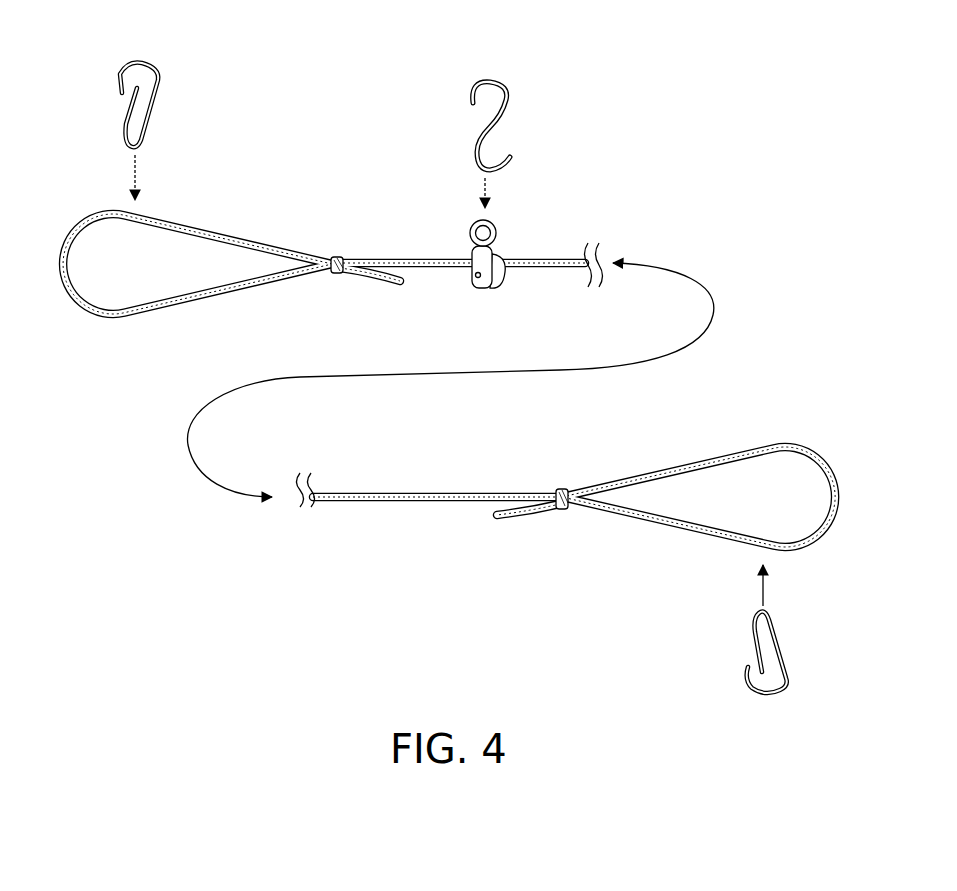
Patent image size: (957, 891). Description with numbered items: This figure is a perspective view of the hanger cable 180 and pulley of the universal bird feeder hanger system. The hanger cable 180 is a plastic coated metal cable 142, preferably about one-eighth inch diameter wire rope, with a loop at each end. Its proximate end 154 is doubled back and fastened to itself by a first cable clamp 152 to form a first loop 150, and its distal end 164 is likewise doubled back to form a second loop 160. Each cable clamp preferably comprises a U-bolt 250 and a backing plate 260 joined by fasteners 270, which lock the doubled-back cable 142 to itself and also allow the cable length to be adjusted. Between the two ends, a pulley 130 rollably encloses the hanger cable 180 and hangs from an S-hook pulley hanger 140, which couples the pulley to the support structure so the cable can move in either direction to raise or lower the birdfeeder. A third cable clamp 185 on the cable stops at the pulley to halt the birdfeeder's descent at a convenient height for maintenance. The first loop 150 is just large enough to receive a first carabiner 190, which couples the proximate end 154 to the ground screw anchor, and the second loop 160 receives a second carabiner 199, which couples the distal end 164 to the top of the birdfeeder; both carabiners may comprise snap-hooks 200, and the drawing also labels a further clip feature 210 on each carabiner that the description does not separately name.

The pulley 130 is at (473, 290).
The S-hook pulley hanger 140 is at (505, 125).
The plastic coated metal cable 142 is at (402, 260).
The first loop 150 is at (130, 318).
The first cable clamp 152 is at (334, 257).
The proximate end 154 is at (186, 215).
The second loop 160 is at (722, 540).
The distal end 164 is at (717, 455).
The hanger cable 180 is at (548, 258).
The third cable clamp 185 is at (160, 74).
The first carabiner 190 is at (118, 82).
The second carabiner 199 is at (756, 620).
The snap-hook 200 is at (160, 92).
The clip 210 is at (143, 63).
The U-bolt 250 is at (341, 257).
The backing plate 260 is at (333, 275).
The fastener 270 is at (346, 275).